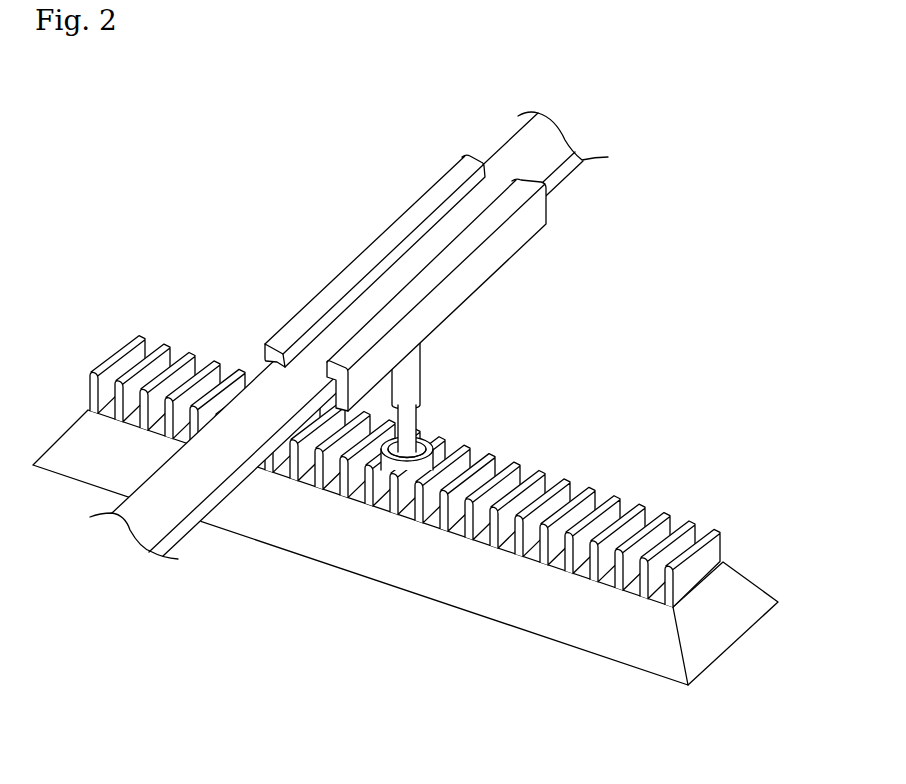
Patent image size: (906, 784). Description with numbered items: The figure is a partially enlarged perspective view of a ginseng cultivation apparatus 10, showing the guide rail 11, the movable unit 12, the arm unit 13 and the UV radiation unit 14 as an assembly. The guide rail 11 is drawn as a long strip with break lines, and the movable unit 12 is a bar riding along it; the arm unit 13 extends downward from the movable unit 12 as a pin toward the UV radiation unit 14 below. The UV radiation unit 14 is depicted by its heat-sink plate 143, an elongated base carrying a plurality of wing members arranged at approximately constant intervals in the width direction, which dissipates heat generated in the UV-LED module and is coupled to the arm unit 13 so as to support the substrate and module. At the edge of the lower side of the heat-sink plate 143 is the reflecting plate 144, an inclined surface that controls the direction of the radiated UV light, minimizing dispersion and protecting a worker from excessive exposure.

The fixing clip 10 is at (372, 319).
The guide rail 11 is at (523, 152).
The movable unit 12 is at (530, 228).
The arm unit 13 is at (408, 382).
The UV radiation unit 14 is at (421, 536).
The heat-sink plate 143 is at (652, 508).
The reflecting plate 144 is at (703, 632).